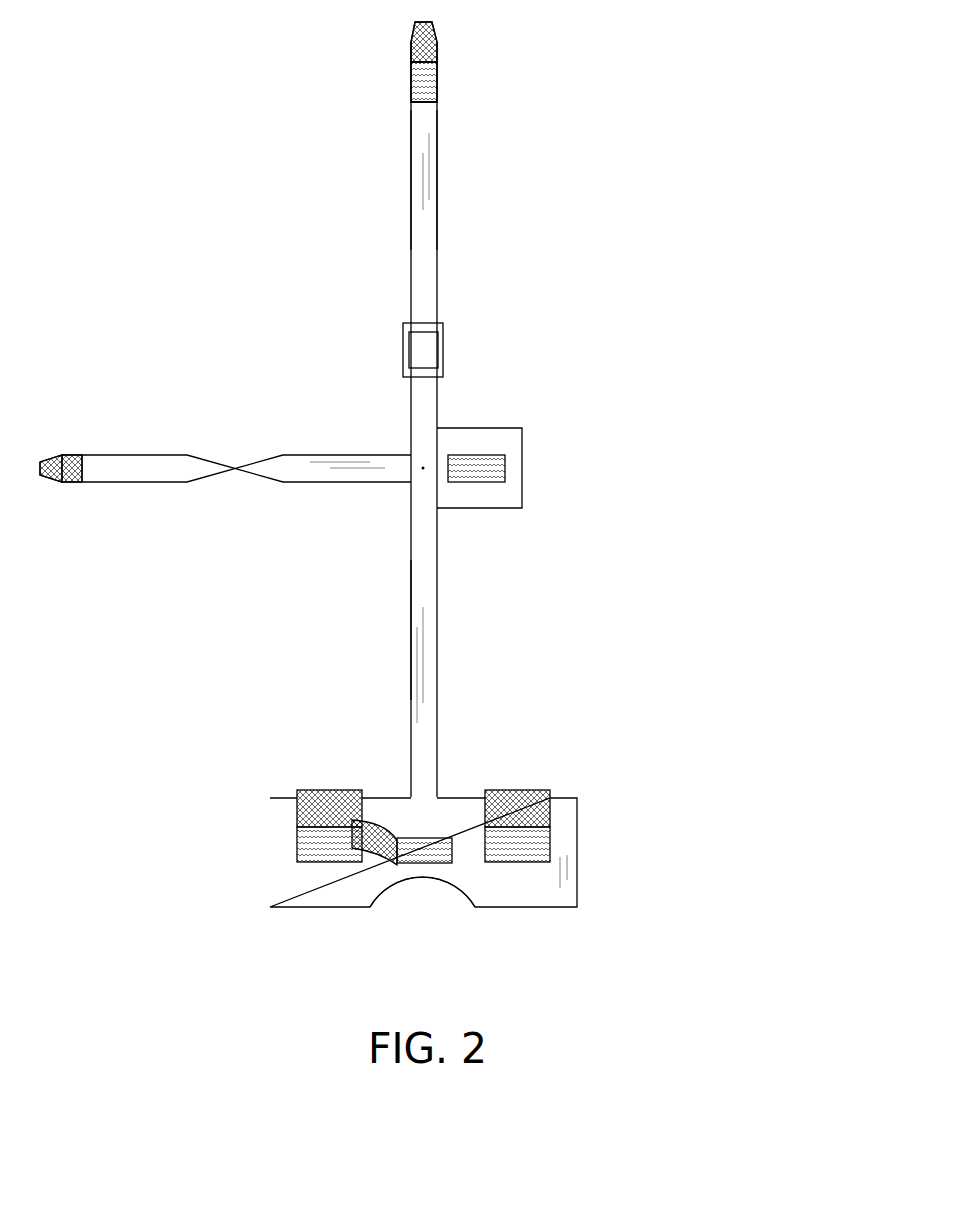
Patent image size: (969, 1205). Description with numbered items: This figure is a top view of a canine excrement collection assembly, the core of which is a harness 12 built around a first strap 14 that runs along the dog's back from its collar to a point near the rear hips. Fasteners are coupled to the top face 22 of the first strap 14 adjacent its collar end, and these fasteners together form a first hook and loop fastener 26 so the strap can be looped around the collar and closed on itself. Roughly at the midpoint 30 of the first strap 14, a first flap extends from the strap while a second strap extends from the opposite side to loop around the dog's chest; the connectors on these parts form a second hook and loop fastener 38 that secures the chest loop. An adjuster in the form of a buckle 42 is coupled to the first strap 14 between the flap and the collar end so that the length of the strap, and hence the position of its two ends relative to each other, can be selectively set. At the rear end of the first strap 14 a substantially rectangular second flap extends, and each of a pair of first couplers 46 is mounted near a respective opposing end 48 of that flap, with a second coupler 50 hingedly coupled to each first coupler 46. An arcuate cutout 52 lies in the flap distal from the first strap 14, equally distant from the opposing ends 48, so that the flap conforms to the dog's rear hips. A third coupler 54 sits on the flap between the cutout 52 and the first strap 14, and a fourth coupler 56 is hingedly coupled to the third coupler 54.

The harness 12 is at (437, 688).
The first strap 14 is at (420, 594).
The top face 22 is at (427, 200).
The first hook and loop fastener 26 is at (427, 45).
The midpoint 30 is at (427, 463).
The second hook and loop fastener 38 is at (68, 486).
The buckle 42 is at (447, 348).
The first coupler 46 is at (323, 855).
The opposing end 48 is at (582, 851).
The second coupler 50 is at (303, 806).
The cutout 52 is at (445, 908).
The third coupler 54 is at (419, 855).
The fourth coupler 56 is at (372, 847).